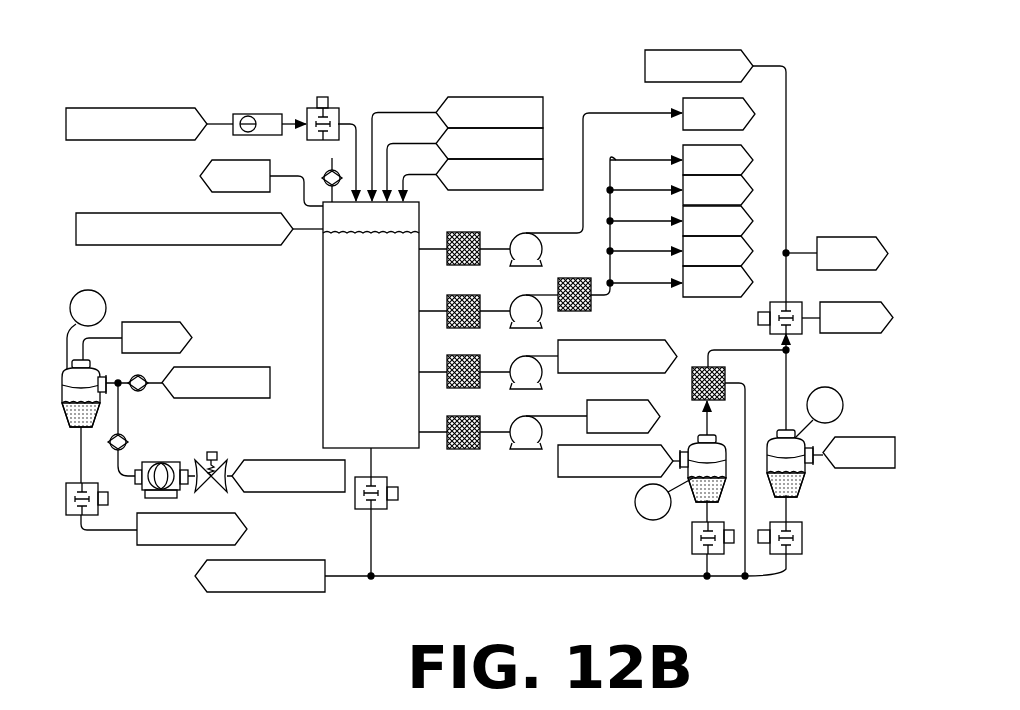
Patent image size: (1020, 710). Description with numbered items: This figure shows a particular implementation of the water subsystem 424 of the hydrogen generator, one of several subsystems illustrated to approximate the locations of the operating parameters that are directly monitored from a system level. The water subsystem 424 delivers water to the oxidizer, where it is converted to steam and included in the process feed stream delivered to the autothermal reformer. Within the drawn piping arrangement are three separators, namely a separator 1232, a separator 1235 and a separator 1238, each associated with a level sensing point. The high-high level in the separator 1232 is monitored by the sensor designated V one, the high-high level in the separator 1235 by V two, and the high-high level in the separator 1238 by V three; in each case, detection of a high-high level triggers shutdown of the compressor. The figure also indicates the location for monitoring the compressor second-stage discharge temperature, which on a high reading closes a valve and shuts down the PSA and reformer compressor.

The water subsystem 424 is at (172, 75).
The separator 1232 is at (98, 418).
The separator 1235 is at (698, 498).
The separator 1238 is at (797, 488).